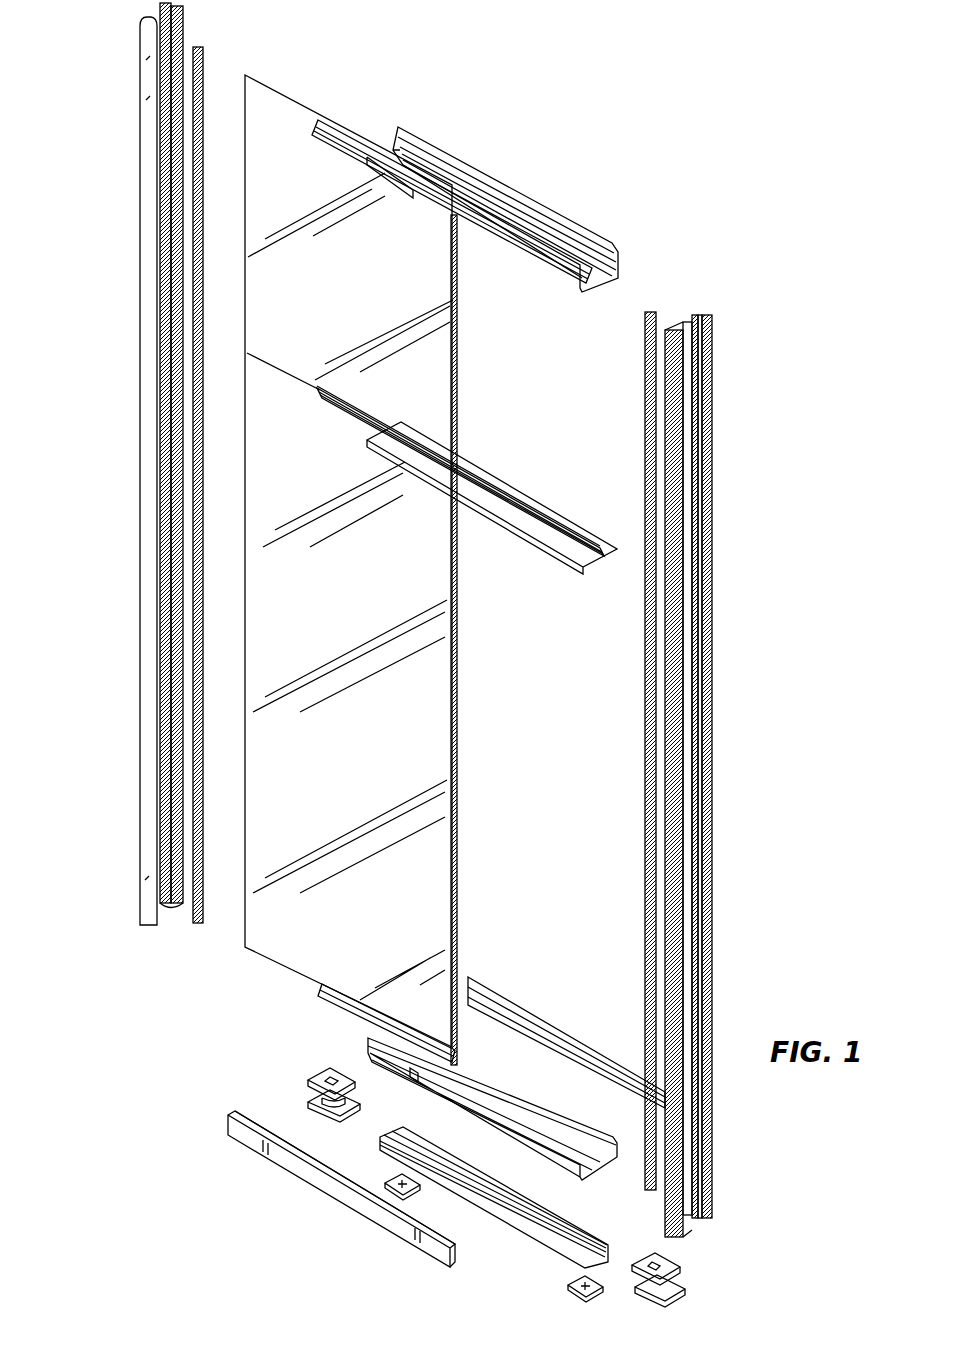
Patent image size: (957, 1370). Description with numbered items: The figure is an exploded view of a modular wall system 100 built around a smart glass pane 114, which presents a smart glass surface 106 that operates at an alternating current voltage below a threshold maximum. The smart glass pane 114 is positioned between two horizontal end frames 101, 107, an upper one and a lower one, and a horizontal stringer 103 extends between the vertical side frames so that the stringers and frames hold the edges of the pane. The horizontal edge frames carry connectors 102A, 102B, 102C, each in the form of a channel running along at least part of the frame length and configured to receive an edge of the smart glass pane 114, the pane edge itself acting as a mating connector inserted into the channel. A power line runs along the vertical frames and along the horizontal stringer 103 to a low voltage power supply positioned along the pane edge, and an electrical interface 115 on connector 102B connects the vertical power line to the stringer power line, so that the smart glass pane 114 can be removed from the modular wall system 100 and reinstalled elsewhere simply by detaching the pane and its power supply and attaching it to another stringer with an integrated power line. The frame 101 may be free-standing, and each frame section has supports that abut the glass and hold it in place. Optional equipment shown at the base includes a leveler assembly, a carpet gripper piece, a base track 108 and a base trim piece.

The modular wall system 100 is at (726, 142).
The horizontal end frame 101 is at (500, 178).
The connector 102A is at (332, 130).
The connector 102B is at (477, 468).
The connector 102C is at (320, 985).
The horizontal stringer 103 is at (525, 490).
The smart glass surface 106 is at (440, 835).
The horizontal end frame 107 is at (540, 1112).
The base track 108 is at (548, 1213).
The smart glass pane 114 is at (455, 745).
The electrical interface 115 is at (362, 412).